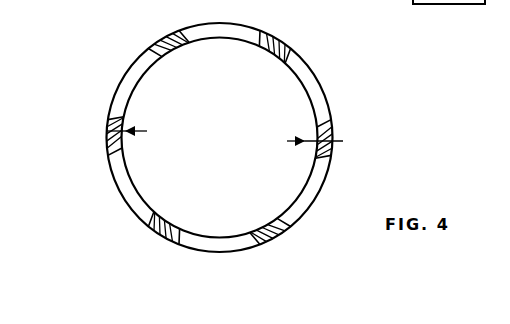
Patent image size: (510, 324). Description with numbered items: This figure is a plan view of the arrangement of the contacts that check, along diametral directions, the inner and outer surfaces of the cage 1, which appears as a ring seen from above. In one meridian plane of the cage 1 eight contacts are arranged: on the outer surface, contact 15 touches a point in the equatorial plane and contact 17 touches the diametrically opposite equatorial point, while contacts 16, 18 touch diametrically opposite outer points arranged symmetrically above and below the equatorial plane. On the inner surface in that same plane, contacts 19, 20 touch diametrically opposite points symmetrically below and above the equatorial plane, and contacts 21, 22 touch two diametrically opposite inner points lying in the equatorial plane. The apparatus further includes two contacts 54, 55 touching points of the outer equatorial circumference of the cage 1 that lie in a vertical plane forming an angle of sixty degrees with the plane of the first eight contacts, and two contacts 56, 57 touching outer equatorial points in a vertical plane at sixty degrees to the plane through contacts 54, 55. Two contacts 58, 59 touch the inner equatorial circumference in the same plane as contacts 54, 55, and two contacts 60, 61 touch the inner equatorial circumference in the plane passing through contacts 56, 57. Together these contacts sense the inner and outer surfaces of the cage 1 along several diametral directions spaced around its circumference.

The cage 1 is at (106, 70).
The contact 15 is at (86, 131).
The contact 16 is at (106, 131).
The contact 17 is at (375, 141).
The contact 18 is at (375, 141).
The contact 19 is at (287, 141).
The contact 20 is at (147, 131).
The contact 21 is at (128, 129).
The contact 22 is at (313, 141).
The contact 54 is at (163, 30).
The contact 55 is at (275, 239).
The contact 56 is at (158, 241).
The contact 57 is at (296, 10).
The contact 58 is at (174, 56).
The contact 59 is at (252, 195).
The contact 60 is at (173, 213).
The contact 61 is at (265, 53).